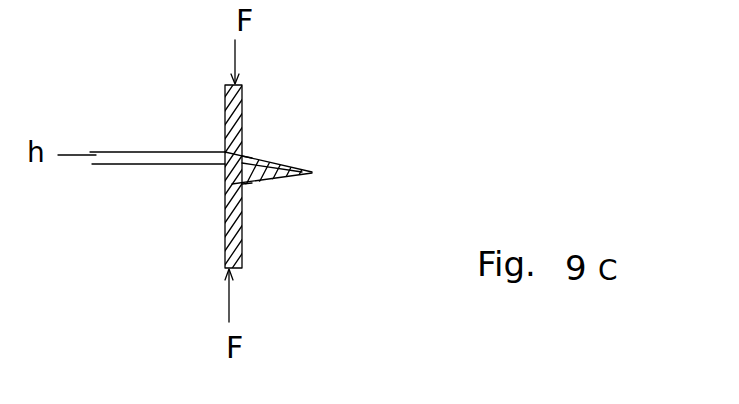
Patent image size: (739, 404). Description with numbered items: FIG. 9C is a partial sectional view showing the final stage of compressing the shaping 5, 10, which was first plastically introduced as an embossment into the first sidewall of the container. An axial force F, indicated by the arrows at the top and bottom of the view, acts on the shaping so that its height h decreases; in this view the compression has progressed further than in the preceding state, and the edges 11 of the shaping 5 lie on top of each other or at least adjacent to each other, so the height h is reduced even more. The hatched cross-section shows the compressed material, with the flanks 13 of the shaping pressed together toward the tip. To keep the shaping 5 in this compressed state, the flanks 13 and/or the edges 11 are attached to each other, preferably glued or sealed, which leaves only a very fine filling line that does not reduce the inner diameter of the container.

The shaping 5 is at (280, 153).
The shaping 10 is at (325, 162).
The edges 11 is at (223, 150).
The flanks 13 is at (248, 157).